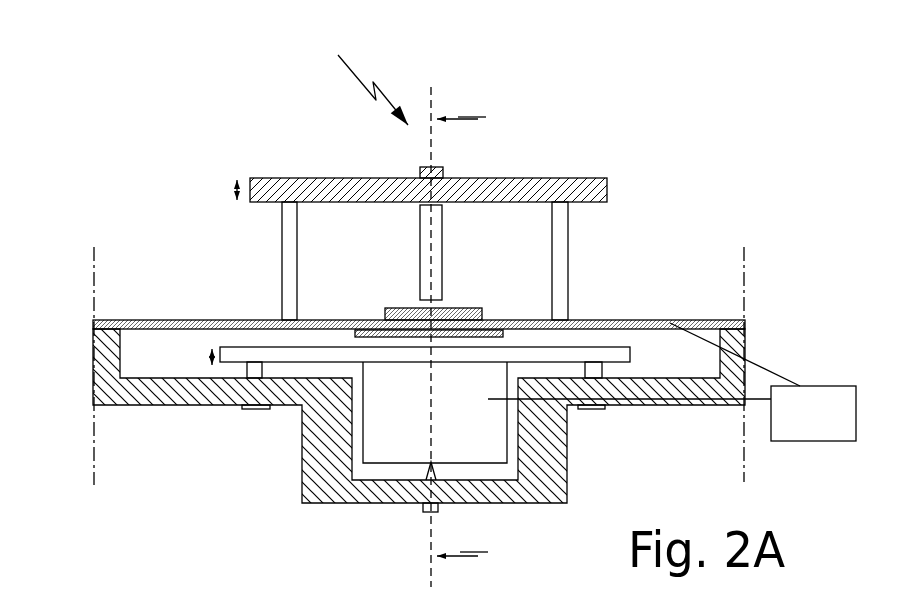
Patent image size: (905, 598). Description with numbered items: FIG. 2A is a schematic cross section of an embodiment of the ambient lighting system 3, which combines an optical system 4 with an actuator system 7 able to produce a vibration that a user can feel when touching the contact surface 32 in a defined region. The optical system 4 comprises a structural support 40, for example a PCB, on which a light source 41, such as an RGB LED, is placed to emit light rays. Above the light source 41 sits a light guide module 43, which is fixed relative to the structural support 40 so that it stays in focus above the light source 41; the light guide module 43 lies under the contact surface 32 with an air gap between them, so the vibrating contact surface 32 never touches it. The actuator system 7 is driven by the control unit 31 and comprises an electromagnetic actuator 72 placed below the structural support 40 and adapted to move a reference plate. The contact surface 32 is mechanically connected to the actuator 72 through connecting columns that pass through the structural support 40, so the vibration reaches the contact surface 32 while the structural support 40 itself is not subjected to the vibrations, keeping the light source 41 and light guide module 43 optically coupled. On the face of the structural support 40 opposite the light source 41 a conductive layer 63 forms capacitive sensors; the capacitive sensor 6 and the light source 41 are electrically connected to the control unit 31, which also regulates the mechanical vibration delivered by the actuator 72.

The ambient lighting system 3 is at (444, 298).
The optical system 4 is at (479, 188).
The capacitive sensor 6 is at (328, 336).
The actuator system 7 is at (245, 453).
The control unit 31 is at (827, 426).
The contact surface 32 is at (432, 167).
The structural support 40 is at (160, 320).
The light source 41 is at (385, 310).
The light guide module 43 is at (425, 235).
The conductive layer 63 is at (500, 333).
The actuator 72 is at (488, 420).